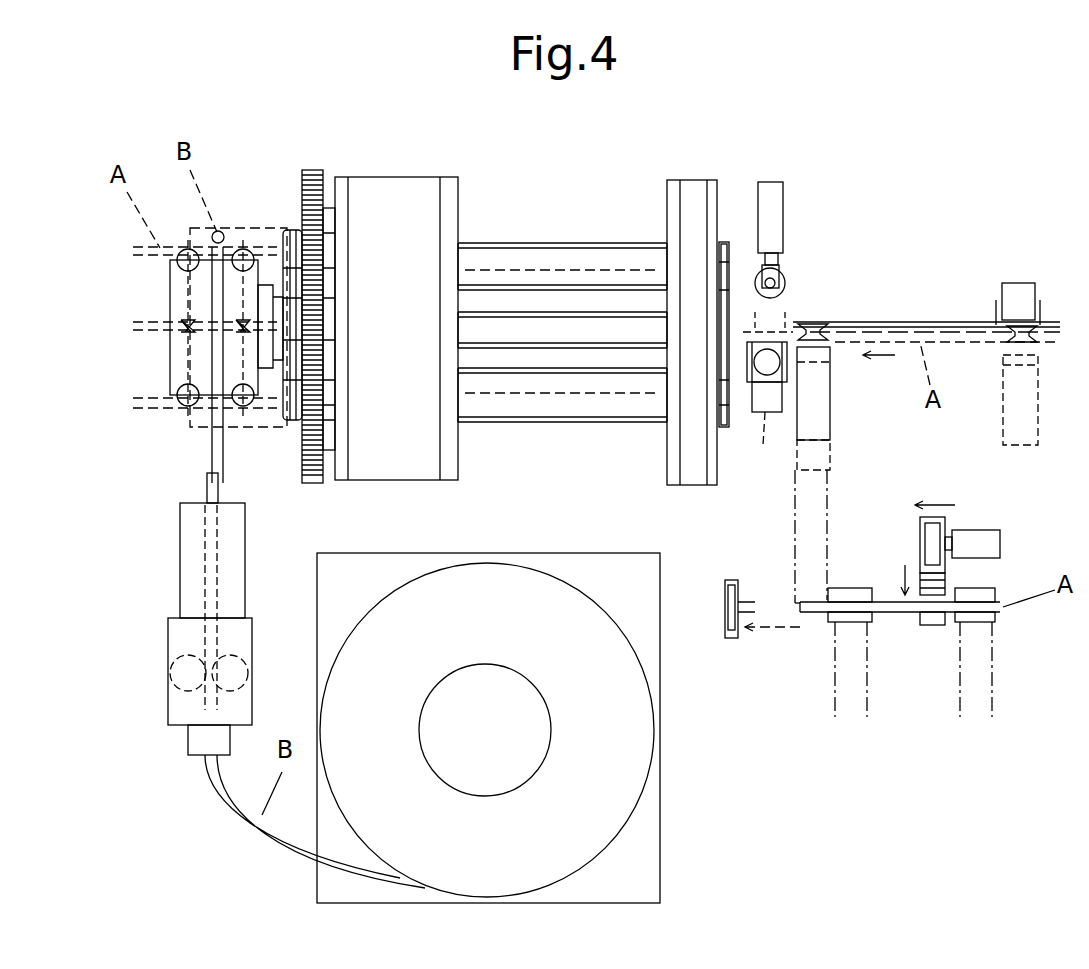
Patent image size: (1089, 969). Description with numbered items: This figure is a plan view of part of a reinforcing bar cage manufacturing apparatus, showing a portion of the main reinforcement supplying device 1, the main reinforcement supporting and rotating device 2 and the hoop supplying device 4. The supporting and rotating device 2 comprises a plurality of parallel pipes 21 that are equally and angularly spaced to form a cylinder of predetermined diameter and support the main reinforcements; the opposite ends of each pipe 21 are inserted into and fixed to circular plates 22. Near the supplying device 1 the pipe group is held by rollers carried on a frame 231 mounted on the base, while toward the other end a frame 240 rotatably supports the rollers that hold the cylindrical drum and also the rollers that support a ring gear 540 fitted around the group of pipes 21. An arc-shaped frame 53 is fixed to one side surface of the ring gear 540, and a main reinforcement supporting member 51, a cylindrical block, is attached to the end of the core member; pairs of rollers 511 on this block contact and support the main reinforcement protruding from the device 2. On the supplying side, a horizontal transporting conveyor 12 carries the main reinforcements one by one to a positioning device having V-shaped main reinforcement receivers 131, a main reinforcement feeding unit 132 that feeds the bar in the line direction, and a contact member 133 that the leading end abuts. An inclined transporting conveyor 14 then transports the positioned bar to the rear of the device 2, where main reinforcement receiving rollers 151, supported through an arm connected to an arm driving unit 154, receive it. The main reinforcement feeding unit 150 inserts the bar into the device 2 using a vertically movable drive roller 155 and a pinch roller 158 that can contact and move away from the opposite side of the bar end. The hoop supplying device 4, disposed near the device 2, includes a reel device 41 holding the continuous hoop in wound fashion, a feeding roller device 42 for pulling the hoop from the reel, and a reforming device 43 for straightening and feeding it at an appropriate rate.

The main reinforcement supplying device 1 is at (939, 189).
The main reinforcement supporting and rotating device 2 is at (533, 177).
The hoop supplying device 4 is at (699, 856).
The horizontal transporting conveyor 12 is at (822, 686).
The inclined transporting conveyor 14 is at (782, 509).
The parallel pipes 21 is at (627, 302).
The circular plates 22 is at (723, 240).
The reel device 41 is at (637, 770).
The feeding roller device 42 is at (172, 697).
The reforming device 43 is at (185, 552).
The main reinforcement supporting member 51 is at (170, 358).
The arc-shaped frame 53 is at (262, 220).
The V-shaped main reinforcement receivers 131 is at (998, 618).
The main reinforcement feeding unit 132 is at (994, 518).
The contact member 133 is at (735, 630).
The main reinforcement feeding unit 150 is at (775, 170).
The main reinforcement receiving rollers 151 is at (1005, 322).
The arm driving unit 154 is at (1018, 292).
The drive roller 155 is at (763, 405).
The pinch roller 158 is at (790, 275).
The frame 231 is at (675, 180).
The frame 240 is at (453, 178).
The rollers 511 is at (185, 274).
The ring gear 540 is at (313, 172).